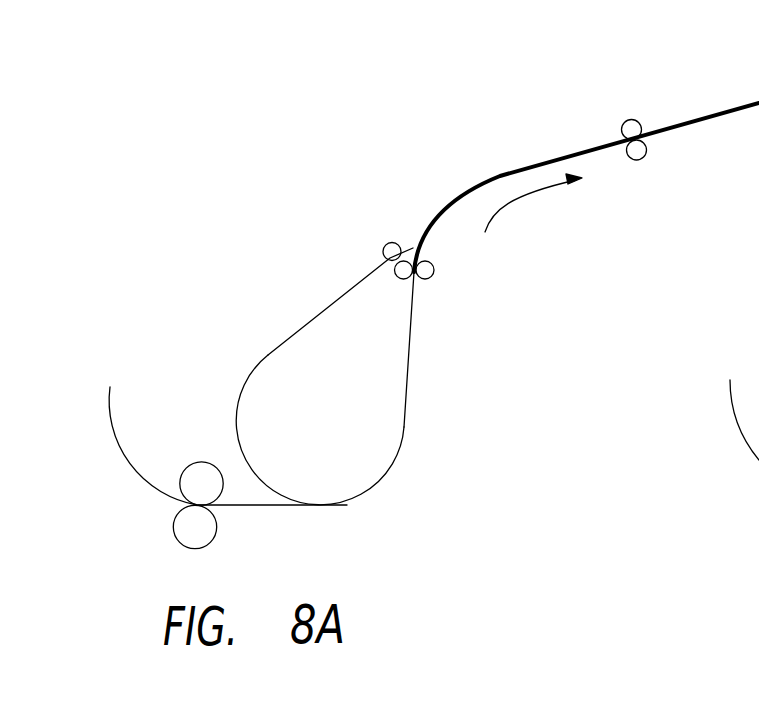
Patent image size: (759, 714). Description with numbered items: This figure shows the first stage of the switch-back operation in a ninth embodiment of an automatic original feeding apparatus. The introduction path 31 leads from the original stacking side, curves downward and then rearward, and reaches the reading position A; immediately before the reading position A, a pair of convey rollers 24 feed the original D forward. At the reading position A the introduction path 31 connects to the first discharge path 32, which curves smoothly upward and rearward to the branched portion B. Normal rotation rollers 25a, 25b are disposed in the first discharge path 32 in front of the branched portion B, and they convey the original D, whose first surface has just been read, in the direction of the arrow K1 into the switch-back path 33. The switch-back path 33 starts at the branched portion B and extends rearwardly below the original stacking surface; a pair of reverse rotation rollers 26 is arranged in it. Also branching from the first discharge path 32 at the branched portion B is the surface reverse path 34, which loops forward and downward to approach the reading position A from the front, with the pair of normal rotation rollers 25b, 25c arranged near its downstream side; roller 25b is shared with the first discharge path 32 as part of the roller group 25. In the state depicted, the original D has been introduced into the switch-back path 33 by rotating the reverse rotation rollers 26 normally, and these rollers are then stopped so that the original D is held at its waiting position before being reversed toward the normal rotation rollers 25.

The convey rollers 24 is at (190, 465).
The normal rotation rollers 25 is at (475, 322).
The normal rotation roller 25a is at (461, 297).
The normal rotation roller 25b is at (403, 280).
The normal rotation roller 25c is at (383, 277).
The reverse rotation rollers 26 is at (632, 120).
The introduction path 31 is at (123, 453).
The first discharge path 32 is at (402, 440).
The switch-back path 33 is at (682, 128).
The surface reverse path 34 is at (263, 360).
The reading position A is at (347, 505).
The branched portion B is at (413, 248).
The original D is at (707, 118).
The arrow K1 is at (533, 206).